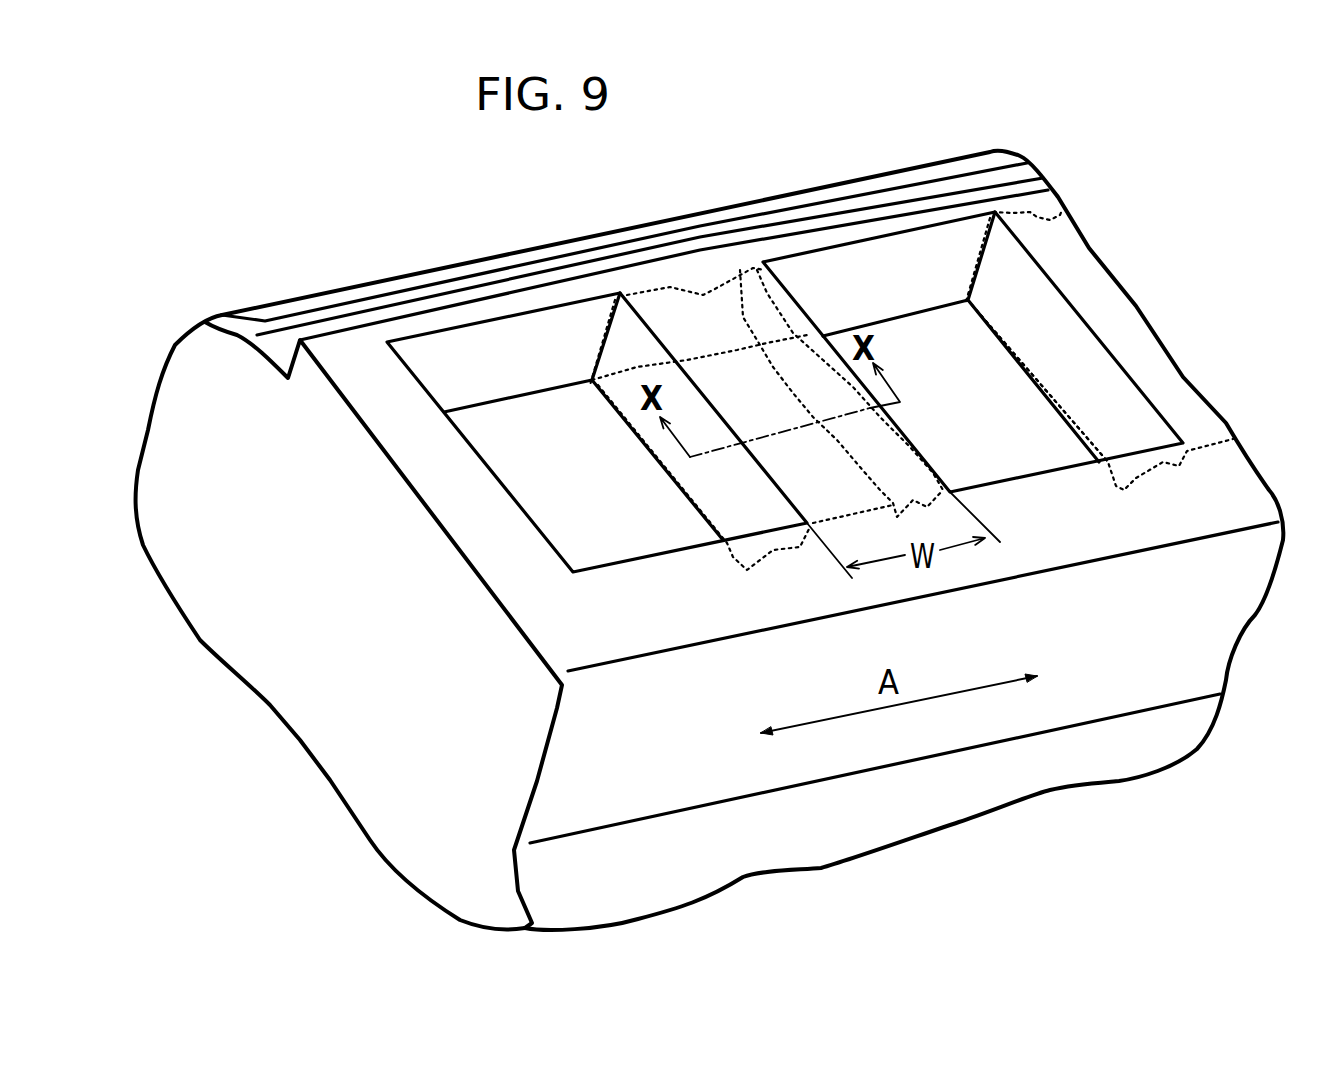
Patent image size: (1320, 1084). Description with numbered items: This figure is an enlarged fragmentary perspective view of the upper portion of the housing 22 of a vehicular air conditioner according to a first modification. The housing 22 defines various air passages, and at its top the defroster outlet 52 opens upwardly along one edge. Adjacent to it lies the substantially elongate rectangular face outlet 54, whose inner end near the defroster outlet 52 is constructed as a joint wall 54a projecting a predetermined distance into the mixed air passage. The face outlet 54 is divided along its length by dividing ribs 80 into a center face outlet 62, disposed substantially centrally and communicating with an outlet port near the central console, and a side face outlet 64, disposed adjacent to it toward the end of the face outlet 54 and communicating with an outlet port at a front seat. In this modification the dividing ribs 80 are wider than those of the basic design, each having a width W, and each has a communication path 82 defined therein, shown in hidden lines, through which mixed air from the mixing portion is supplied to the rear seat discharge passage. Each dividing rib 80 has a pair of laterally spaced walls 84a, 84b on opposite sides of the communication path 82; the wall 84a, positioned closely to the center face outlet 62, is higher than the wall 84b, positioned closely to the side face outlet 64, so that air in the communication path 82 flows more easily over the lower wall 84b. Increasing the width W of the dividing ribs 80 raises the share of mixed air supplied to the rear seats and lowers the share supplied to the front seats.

The housing 22 is at (335, 756).
The defroster outlet 52 is at (335, 305).
The face outlet 54 is at (481, 440).
The joint wall 54a is at (882, 290).
The center face outlet 62 is at (1044, 440).
The side face outlet 64 is at (632, 540).
The dividing rib 80 is at (774, 322).
The communication path 82 is at (720, 272).
The wall 84a is at (592, 380).
The wall 84b is at (927, 448).